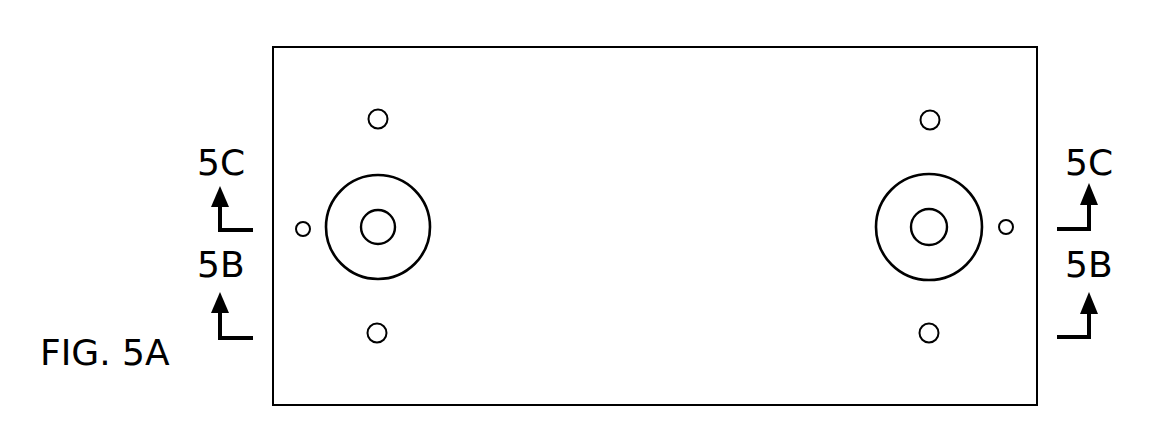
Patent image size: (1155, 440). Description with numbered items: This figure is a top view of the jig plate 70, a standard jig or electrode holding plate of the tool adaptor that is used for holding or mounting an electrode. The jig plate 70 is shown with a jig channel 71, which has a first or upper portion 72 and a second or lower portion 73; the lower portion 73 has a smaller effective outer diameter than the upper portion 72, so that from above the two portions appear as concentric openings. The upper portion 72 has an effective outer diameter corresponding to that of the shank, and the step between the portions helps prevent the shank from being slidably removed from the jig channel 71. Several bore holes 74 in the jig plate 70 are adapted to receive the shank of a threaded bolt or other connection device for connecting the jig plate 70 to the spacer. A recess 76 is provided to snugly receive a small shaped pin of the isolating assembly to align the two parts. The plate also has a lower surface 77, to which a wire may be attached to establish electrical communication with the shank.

The jig plate 70 is at (1020, 78).
The jig channel 71 is at (393, 202).
The first or upper portion 72 is at (383, 176).
The second or lower portion 73 is at (393, 224).
The bore holes 74 is at (386, 114).
The recess 76 is at (303, 222).
The lower surface 77 is at (668, 284).